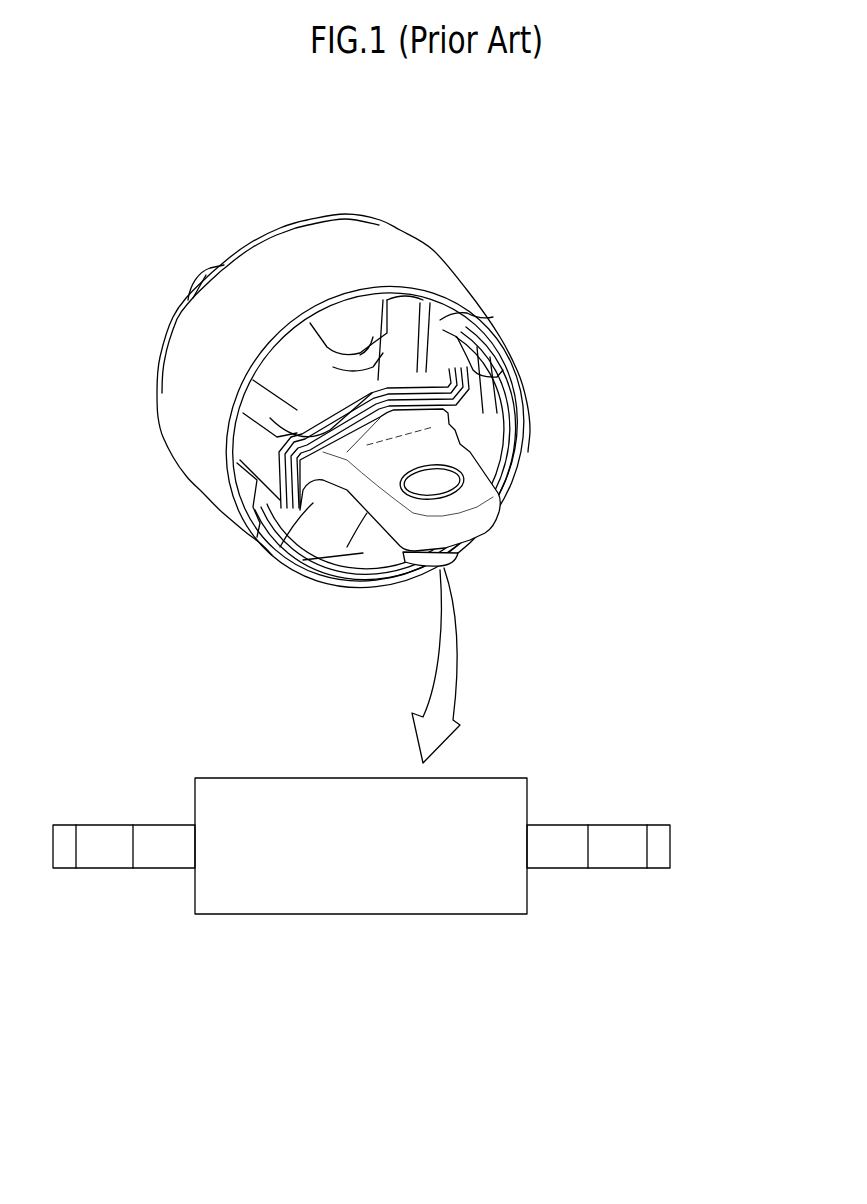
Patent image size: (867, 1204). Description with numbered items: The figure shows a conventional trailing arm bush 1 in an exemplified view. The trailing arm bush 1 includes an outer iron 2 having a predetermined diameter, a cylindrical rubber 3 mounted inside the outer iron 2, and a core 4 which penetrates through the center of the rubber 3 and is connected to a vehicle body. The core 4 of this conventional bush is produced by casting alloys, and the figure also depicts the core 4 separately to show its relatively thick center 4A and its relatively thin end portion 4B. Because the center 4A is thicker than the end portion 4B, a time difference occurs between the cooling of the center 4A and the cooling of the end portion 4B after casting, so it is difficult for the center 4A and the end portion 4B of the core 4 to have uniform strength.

The trailing arm bush 1 is at (486, 289).
The outer iron 2 is at (186, 455).
The rubber 3 is at (323, 530).
The core 4 is at (460, 410).
The center 4A is at (349, 881).
The end portion 4B is at (657, 837).